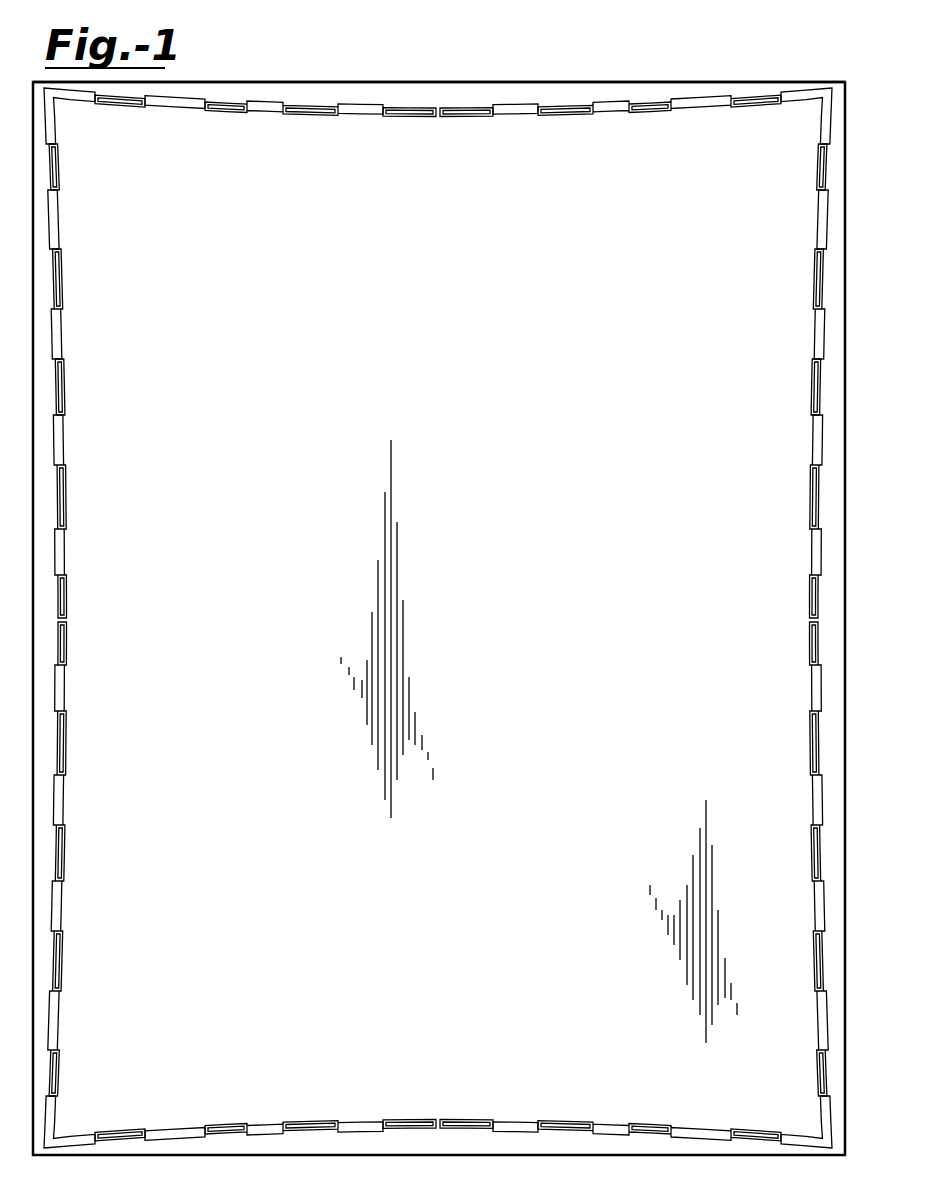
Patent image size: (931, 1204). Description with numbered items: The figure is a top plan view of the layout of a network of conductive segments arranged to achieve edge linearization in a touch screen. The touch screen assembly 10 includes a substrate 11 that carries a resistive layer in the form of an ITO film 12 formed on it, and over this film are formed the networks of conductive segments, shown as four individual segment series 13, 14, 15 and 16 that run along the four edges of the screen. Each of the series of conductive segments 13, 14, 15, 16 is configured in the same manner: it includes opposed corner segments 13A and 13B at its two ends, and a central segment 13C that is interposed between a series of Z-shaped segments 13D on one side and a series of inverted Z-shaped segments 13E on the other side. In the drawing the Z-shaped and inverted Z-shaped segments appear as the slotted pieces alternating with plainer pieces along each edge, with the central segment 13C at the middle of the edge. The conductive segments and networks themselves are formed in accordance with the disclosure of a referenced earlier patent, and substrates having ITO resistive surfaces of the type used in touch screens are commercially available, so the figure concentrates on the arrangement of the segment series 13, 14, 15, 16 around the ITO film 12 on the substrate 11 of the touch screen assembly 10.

The touch screen assembly 10 is at (356, 71).
The substrate 11 is at (665, 82).
The ITO film 12 is at (444, 411).
The segment series 13 is at (438, 157).
The corner segment 13A is at (46, 97).
The corner segment 13B is at (829, 98).
The central segment 13C is at (437, 116).
The Z-shaped segment 13D is at (177, 108).
The inverted Z-shaped segment 13E is at (55, 244).
The segment series 14 is at (805, 528).
The segment series 15 is at (352, 1120).
The segment series 16 is at (123, 646).